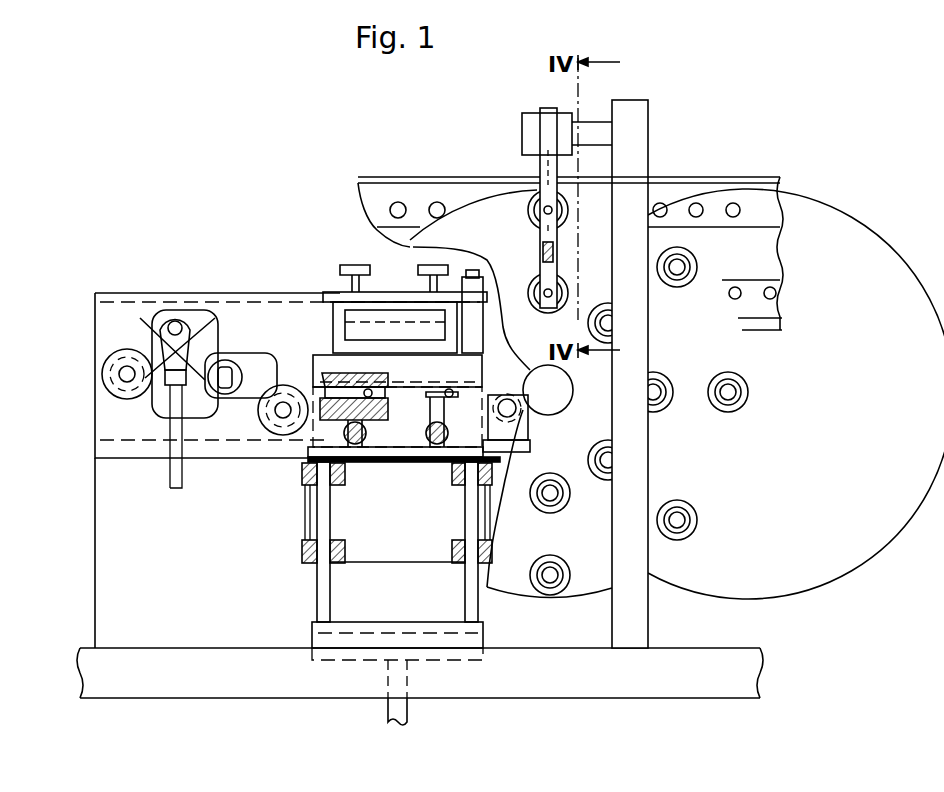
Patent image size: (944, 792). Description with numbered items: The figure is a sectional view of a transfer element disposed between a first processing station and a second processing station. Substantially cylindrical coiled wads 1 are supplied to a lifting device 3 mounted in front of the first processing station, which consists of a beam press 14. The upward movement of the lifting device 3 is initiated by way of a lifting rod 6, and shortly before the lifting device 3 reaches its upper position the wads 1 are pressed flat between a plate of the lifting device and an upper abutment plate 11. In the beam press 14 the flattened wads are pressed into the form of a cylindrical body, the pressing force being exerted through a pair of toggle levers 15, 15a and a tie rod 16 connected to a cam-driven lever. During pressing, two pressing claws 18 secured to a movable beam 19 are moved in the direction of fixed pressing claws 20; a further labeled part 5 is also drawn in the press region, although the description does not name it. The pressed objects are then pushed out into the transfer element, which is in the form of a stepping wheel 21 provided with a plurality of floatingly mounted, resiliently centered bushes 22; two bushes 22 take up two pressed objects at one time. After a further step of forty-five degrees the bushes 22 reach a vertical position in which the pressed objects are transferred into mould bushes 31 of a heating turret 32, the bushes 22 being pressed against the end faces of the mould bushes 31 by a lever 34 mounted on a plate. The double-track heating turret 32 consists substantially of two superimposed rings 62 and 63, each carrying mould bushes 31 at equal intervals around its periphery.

The coiled wad 1 is at (437, 457).
The lifting device 3 is at (326, 428).
The roller block 5 is at (338, 426).
The lifting rod 6 is at (404, 720).
The upper abutment plate 11 is at (400, 392).
The beam press 14 is at (157, 292).
The toggle lever 15 is at (143, 340).
The toggle lever 15a is at (223, 347).
The tie rod 16 is at (177, 470).
The pressing claw 18 is at (300, 400).
The movable beam 19 is at (260, 360).
The fixed pressing claw 20 is at (404, 424).
The stepping wheel 21 is at (733, 452).
The bush 22 is at (685, 522).
The mould bush 31 is at (737, 213).
The heating turret 32 is at (725, 178).
The lever 34 is at (547, 210).
The ring 62 is at (450, 193).
The ring 63 is at (770, 307).